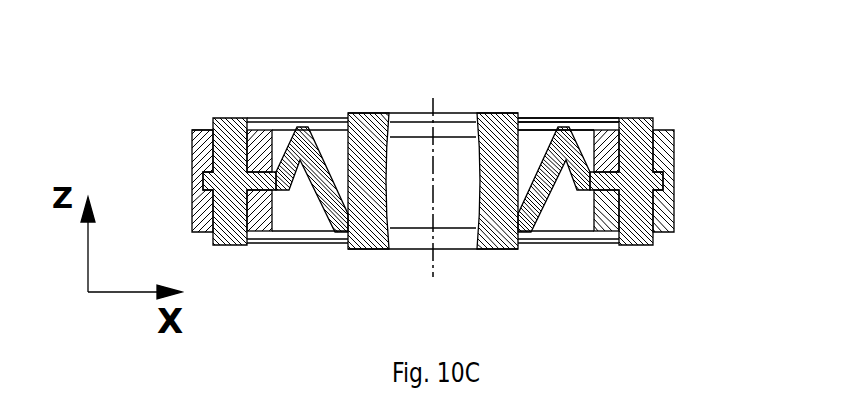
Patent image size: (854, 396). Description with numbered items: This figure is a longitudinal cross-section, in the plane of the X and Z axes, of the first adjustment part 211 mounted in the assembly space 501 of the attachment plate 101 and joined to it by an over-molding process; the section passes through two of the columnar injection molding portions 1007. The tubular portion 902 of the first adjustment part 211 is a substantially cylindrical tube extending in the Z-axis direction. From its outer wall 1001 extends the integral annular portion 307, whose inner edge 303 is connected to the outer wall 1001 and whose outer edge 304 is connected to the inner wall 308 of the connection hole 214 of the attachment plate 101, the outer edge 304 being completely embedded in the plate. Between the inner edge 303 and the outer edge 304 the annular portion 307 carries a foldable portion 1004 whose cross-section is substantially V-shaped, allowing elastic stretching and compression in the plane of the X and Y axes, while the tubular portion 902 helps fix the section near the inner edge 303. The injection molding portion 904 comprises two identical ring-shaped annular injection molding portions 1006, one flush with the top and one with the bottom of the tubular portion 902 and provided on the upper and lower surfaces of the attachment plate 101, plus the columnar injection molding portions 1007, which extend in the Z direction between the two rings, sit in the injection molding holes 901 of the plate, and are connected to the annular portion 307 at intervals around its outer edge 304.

The attachment plate 101 is at (190, 173).
The injection molding hole 901 is at (197, 131).
The injection molding portion 904 is at (235, 118).
The inner wall 308 is at (272, 145).
The connection hole 214 is at (292, 218).
The inner edge 303 is at (343, 228).
The outer wall 1001 is at (348, 128).
The first adjustment part 211 is at (385, 122).
The tubular portion 902 is at (492, 127).
The annular portion 307 is at (556, 130).
The foldable portion 1004 is at (590, 137).
The assembly space 501 is at (600, 225).
The annular injection molding portion 1006 is at (650, 121).
The outer edge 304 is at (673, 162).
The columnar injection molding portion 1007 is at (673, 203).